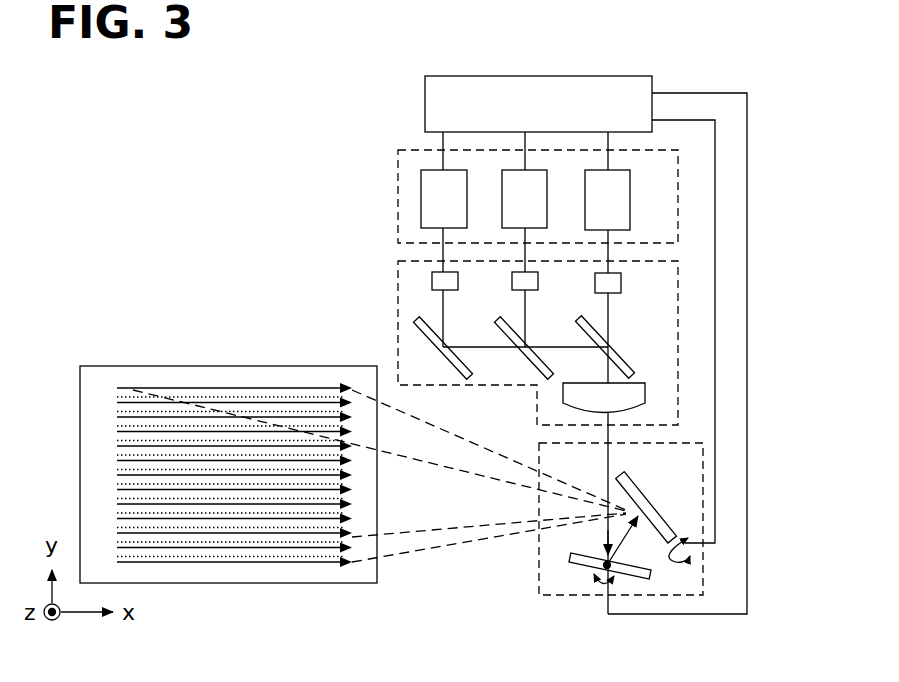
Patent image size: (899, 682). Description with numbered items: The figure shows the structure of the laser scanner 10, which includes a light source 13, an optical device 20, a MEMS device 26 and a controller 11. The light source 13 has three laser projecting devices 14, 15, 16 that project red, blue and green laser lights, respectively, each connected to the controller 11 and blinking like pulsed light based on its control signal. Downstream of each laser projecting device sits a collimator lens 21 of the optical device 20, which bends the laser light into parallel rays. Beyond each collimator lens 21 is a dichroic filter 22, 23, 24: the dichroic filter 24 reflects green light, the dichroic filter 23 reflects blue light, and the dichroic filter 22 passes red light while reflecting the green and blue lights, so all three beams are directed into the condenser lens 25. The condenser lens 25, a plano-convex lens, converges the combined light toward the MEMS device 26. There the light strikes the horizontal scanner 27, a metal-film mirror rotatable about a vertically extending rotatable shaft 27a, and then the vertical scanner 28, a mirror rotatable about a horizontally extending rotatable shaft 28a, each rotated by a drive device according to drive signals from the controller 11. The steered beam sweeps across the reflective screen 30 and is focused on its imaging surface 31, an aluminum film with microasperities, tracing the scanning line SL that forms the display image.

The laser scanner 10 is at (349, 111).
The controller 11 is at (565, 76).
The light source 13 is at (390, 182).
The laser projecting device 14 is at (656, 187).
The laser projecting device 15 is at (573, 187).
The laser projecting device 16 is at (490, 187).
The optical device 20 is at (388, 290).
The collimator lens 21 is at (458, 283).
The dichroic filter 22 is at (616, 350).
The dichroic filter 23 is at (541, 360).
The dichroic filter 24 is at (462, 360).
The condenser lens 25 is at (645, 390).
The MEMS device 26 is at (703, 578).
The horizontal scanner 27 is at (570, 557).
The rotatable shaft 27a is at (587, 566).
The vertical scanner 28 is at (641, 495).
The rotatable shaft 28a is at (612, 472).
The screen 30 is at (167, 366).
The imaging surface 31 is at (94, 479).
The scanning line SL is at (234, 388).